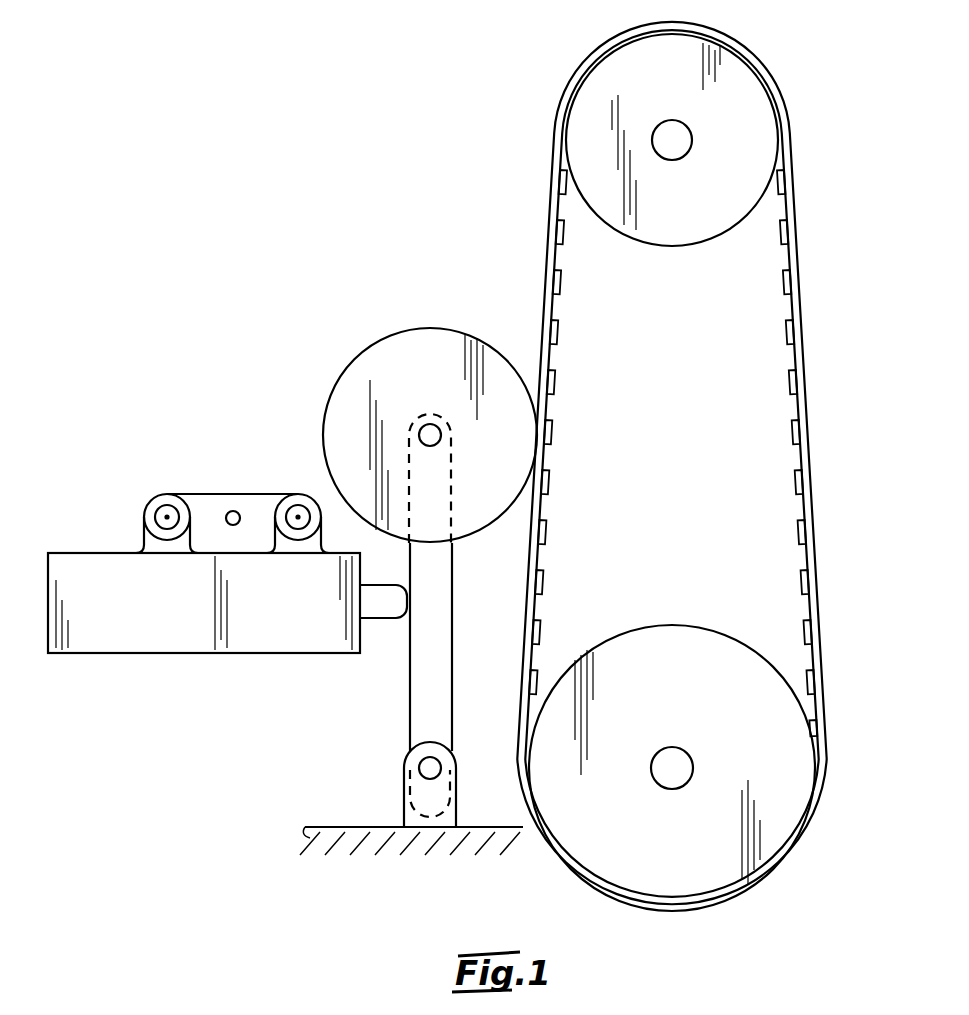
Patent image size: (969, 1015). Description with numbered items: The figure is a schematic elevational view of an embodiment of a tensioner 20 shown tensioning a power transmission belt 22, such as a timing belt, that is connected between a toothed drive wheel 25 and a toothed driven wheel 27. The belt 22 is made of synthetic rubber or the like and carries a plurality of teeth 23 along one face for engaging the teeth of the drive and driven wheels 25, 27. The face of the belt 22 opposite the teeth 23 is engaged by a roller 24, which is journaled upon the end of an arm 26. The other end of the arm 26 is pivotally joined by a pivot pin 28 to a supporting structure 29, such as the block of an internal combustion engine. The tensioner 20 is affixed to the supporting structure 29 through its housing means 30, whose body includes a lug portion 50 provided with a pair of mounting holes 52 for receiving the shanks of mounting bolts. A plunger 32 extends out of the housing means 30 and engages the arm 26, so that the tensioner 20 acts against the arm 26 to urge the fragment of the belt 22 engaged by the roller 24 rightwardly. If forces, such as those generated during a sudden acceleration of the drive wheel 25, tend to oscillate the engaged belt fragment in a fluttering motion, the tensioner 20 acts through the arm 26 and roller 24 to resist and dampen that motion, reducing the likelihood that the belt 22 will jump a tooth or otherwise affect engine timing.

The tensioner 20 is at (128, 535).
The belt 22 is at (798, 280).
The teeth 23 is at (566, 238).
The roller 24 is at (427, 352).
The drive wheel 25 is at (743, 100).
The arm 26 is at (433, 637).
The driven wheel 27 is at (763, 792).
The pivot pin 28 is at (425, 768).
The supporting structure 29 is at (338, 827).
The housing means 30 is at (177, 653).
The plunger 32 is at (393, 619).
The lug portion 50 is at (207, 512).
The mounting holes 52 is at (298, 517).